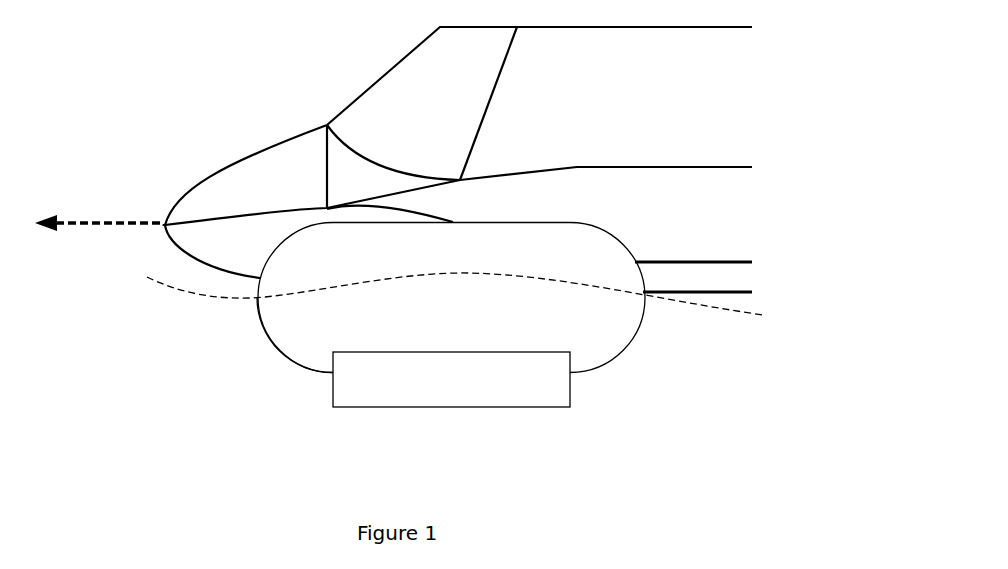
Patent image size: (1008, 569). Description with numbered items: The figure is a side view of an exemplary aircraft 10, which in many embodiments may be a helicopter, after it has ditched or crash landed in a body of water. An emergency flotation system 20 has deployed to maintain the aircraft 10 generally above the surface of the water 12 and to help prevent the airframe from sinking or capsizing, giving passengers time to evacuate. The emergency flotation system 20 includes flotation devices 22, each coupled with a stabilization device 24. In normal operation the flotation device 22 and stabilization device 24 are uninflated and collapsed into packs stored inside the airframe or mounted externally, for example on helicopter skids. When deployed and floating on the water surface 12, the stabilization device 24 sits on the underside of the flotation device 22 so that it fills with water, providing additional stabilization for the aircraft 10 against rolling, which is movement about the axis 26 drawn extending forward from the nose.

The aircraft 10 is at (188, 48).
The surface of the water 12 is at (220, 300).
The emergency flotation system 20 is at (672, 346).
The flotation device 22 is at (293, 364).
The stabilization device 24 is at (385, 410).
The axis 26 is at (107, 221).